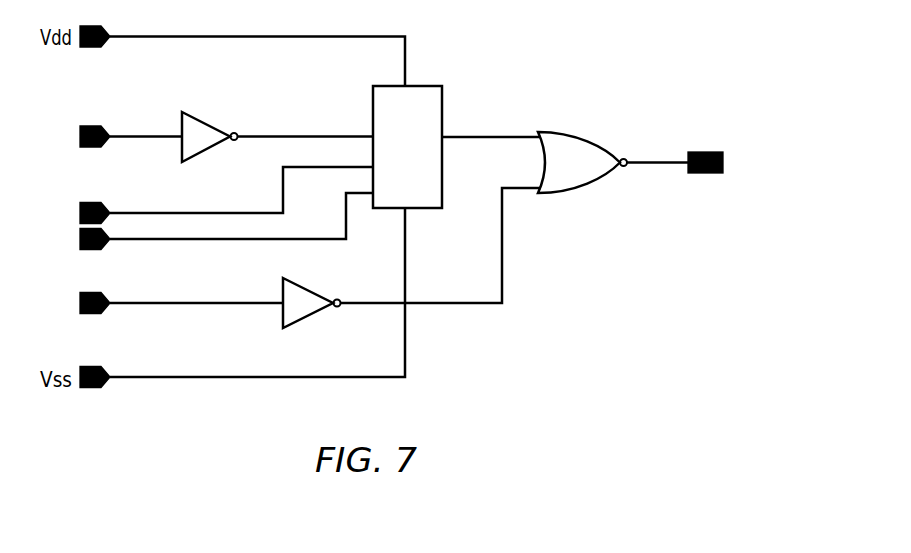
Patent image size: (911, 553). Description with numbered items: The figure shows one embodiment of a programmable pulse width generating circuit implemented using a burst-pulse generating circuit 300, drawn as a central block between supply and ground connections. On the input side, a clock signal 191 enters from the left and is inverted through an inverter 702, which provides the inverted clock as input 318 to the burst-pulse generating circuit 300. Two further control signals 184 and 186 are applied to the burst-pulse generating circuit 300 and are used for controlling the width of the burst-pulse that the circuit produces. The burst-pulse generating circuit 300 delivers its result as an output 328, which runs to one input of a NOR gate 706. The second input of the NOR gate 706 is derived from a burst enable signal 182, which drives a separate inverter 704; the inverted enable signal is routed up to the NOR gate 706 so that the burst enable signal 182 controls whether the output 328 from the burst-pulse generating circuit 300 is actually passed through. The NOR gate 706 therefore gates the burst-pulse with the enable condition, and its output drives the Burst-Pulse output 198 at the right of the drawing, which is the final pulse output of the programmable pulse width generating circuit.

The clock signal 191 is at (109, 136).
The inverter 702 is at (215, 125).
The input 318 is at (297, 134).
The burst-pulse generating circuit 300 is at (422, 152).
The output 328 is at (455, 134).
The control signal 184 is at (206, 196).
The control signal 186 is at (206, 222).
The burst enable signal 182 is at (161, 302).
The inverter 704 is at (312, 313).
The NOR gate 706 is at (586, 133).
The Burst-Pulse output 198 is at (732, 167).